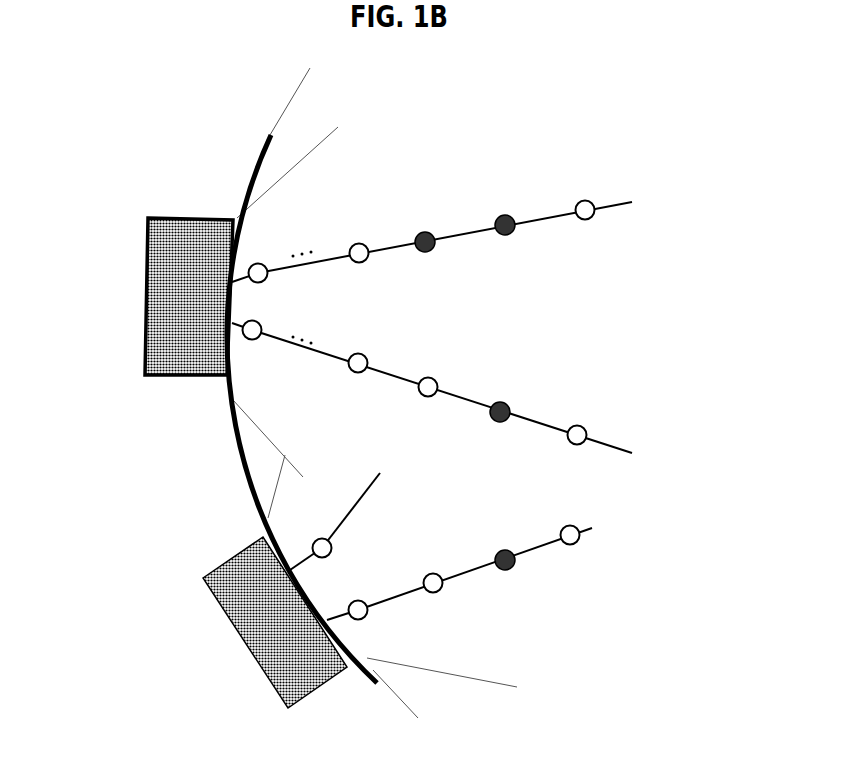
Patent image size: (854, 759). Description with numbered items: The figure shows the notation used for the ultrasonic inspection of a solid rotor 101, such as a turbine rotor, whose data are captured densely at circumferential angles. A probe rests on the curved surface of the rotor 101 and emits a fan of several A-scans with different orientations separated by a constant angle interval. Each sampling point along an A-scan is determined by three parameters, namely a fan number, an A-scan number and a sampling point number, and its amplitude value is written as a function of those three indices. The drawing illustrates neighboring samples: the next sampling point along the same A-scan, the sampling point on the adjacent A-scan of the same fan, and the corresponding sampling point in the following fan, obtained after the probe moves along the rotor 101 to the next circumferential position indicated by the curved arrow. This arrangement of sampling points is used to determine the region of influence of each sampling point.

The rotor 101 is at (243, 190).